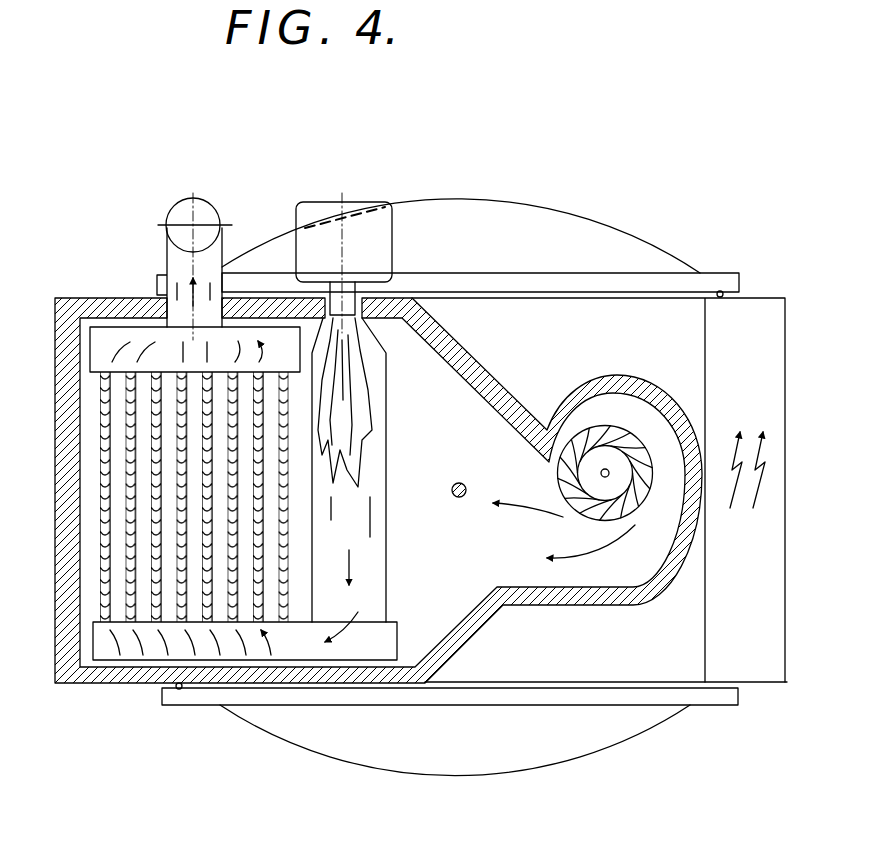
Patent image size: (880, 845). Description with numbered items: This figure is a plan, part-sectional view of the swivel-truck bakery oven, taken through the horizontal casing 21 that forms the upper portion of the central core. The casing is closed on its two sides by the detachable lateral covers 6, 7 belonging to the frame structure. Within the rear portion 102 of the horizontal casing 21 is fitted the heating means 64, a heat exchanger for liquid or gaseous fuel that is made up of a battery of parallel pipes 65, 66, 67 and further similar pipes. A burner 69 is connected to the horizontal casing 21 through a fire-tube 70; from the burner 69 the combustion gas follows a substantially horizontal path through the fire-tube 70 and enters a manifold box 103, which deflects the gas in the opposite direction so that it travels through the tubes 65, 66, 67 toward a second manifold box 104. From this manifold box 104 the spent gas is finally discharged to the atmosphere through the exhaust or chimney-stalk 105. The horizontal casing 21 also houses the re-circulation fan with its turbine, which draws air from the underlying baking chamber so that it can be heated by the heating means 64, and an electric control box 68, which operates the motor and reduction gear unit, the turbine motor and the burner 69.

The detachable lateral cover 6 is at (497, 777).
The detachable lateral cover 7 is at (415, 201).
The horizontal casing 21 is at (645, 673).
The means for heating the air 64 is at (167, 523).
The pipe 65 is at (103, 423).
The pipe 66 is at (130, 450).
The pipe 67 is at (153, 473).
The electric control box 68 is at (773, 347).
The burner 69 is at (318, 202).
The fire-tube 70 is at (386, 380).
The rear portion 102 is at (85, 665).
The manifold box 103 is at (132, 655).
The manifold box 104 is at (140, 333).
The exhaust or chimney-stalk 105 is at (188, 212).